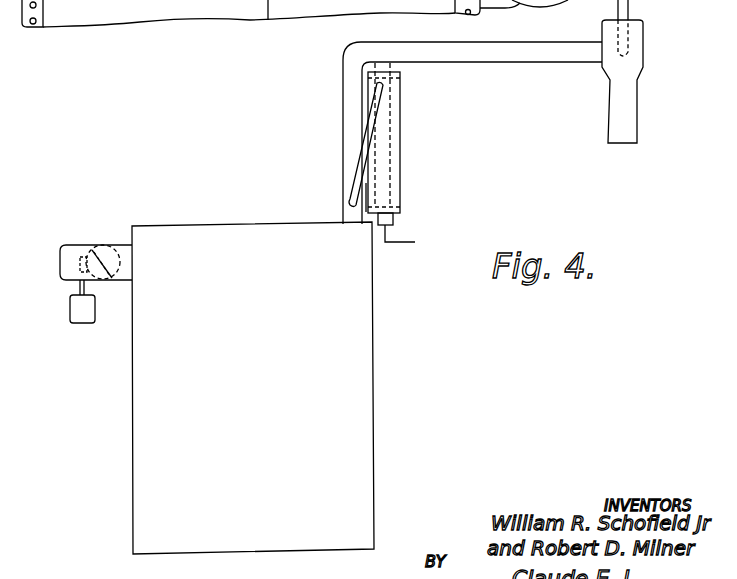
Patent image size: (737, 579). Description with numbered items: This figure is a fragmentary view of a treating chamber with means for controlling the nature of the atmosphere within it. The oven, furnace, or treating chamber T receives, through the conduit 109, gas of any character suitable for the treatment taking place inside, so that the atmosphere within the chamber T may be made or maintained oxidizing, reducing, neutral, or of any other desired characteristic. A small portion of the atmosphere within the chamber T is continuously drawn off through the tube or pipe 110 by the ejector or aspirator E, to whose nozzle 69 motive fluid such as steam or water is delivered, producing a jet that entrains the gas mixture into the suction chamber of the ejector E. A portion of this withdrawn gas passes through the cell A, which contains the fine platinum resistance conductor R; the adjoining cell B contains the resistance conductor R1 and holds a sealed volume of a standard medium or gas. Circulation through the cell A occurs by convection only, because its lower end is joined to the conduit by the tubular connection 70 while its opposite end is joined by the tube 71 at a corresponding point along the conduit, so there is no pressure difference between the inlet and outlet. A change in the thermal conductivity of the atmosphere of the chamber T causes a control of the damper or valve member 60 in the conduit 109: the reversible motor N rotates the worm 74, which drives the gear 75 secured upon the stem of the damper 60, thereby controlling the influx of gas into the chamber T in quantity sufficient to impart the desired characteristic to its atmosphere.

The tube or pipe 110 is at (343, 103).
The nozzle 69 is at (630, 42).
The ejector or aspirator E is at (643, 60).
The cell or chamber B is at (400, 152).
The resistance wire or conductor R is at (378, 178).
The resistance conductor R1 is at (392, 124).
The chamber or cell A is at (371, 108).
The tube 71 is at (358, 168).
The tubular connection 70 is at (364, 208).
The oven, furnace, or treating chamber T is at (372, 348).
The conduit 109 is at (73, 248).
The damper or valve member 60 is at (102, 260).
The gear 75 is at (112, 278).
The worm 74 is at (80, 263).
The motor N is at (70, 312).